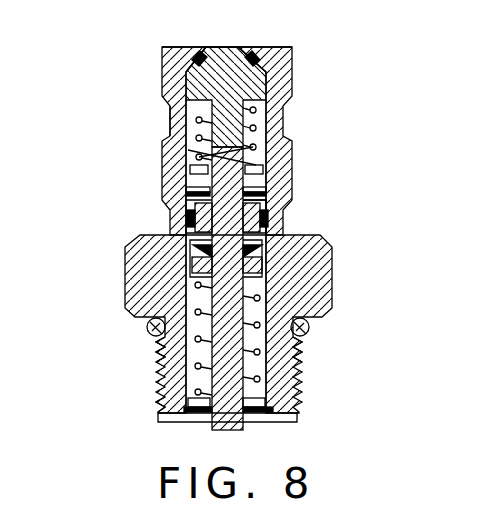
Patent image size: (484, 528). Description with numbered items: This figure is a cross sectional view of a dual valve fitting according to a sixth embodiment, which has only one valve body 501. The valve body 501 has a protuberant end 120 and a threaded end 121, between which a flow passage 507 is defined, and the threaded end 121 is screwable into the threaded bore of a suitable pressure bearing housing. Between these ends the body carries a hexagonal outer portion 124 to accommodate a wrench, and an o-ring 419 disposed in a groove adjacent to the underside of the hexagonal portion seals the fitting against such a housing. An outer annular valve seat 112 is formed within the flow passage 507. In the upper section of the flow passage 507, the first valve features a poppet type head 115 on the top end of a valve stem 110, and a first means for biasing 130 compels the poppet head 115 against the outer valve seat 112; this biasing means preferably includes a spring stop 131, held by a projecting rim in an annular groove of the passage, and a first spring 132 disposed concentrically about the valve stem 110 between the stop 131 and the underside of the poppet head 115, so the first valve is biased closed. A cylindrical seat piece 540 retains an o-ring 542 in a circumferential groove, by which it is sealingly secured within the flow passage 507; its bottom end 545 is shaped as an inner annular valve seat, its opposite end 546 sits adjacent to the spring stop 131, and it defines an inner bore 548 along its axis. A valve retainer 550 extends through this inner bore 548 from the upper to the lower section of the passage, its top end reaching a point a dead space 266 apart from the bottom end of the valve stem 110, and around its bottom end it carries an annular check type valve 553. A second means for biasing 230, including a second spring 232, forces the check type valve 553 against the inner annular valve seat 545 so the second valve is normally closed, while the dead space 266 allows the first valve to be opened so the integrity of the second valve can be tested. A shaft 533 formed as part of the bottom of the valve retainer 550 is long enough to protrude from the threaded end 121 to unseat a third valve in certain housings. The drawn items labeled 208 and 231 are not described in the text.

The valve stem 110 is at (228, 97).
The outer annular valve seat 112 is at (238, 47).
The poppet type head 115 is at (217, 47).
The protuberant end 120 is at (160, 59).
The threaded end 121 is at (156, 352).
The hexagonal outer portion 124 is at (128, 263).
The first means for biasing 130 is at (215, 153).
The spring stop 131 is at (262, 160).
The first spring 132 is at (270, 128).
The bottom flange 208 is at (258, 424).
The second means for biasing 230 is at (180, 388).
The thread end 231 is at (157, 418).
The second spring 232 is at (253, 364).
The dead space 266 is at (178, 130).
The o-ring 419 is at (147, 328).
The valve body 501 is at (292, 58).
The flow passage 507 is at (182, 110).
The shaft 533 is at (235, 390).
The seat piece 540 is at (272, 226).
The o-ring 542 is at (272, 212).
The inner annular valve seat 545 is at (187, 246).
The opposite end 546 is at (184, 200).
The inner bore 548 is at (186, 172).
The valve retainer 550 is at (188, 292).
The check type valve 553 is at (262, 254).